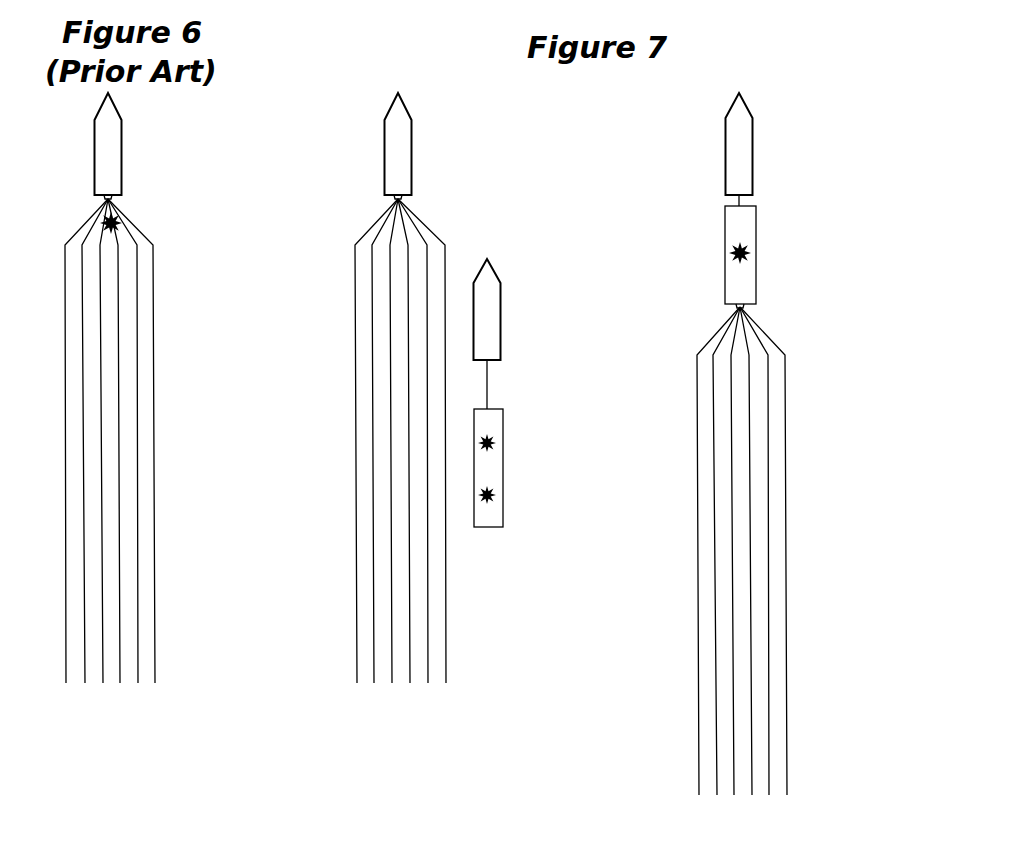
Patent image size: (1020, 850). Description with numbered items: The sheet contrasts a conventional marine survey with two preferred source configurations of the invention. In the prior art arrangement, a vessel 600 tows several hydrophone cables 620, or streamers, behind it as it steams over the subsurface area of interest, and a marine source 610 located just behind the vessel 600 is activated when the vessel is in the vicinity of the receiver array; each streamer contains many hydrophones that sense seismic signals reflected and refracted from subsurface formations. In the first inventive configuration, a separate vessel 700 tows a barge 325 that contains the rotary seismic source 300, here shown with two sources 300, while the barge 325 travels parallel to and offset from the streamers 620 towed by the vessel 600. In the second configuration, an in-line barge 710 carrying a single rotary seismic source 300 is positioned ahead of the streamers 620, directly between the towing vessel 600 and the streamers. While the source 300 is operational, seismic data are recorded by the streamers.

In FIG. 6, the vessel 600 is at (122, 144).
In FIG. 7, the vessel 600 is at (412, 144).
In FIG. 6, the marine source 610 is at (122, 211).
In FIG. 6, the hydrophone cables 620 is at (120, 426).
In FIG. 7, the hydrophone cables 620 is at (392, 538).
In FIG. 7, the vessel 700 is at (502, 297).
In FIG. 7, the rotary seismic source 300 is at (492, 436).
In FIG. 7, the barge 325 is at (503, 465).
In FIG. 7, the barge 710 is at (757, 255).